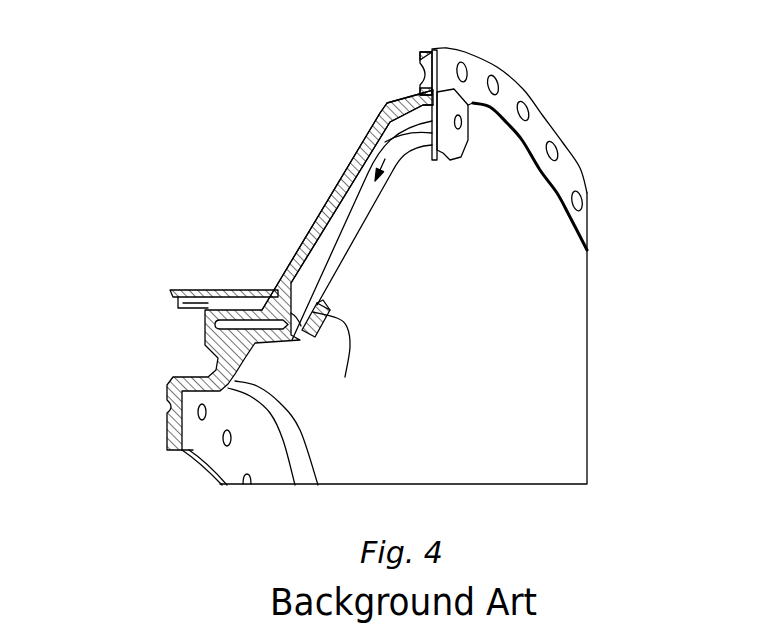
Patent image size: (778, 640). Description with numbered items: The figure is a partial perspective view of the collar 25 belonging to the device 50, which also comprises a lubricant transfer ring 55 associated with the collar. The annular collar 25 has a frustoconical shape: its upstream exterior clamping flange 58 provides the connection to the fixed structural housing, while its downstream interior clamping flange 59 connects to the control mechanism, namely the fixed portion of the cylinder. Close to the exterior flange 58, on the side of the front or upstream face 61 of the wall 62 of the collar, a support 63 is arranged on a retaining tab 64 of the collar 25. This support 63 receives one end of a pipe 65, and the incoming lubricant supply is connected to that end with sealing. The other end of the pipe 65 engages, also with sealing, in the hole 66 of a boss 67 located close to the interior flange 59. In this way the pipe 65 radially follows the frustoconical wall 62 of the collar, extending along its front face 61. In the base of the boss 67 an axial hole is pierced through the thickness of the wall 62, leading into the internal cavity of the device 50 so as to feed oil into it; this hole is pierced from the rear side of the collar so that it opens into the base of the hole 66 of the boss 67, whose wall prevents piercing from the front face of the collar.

The collar 25 is at (562, 371).
The device 50 is at (137, 297).
The lubricant transfer ring 55 is at (190, 338).
The upstream exterior clamping flange 58 is at (542, 127).
The downstream interior clamping flange 59 is at (228, 475).
The front face 61 is at (355, 207).
The wall 62 is at (357, 158).
The support 63 is at (440, 107).
The retaining tab 64 is at (465, 152).
The pipe 65 is at (373, 193).
The hole 66 is at (307, 340).
The boss 67 is at (330, 322).